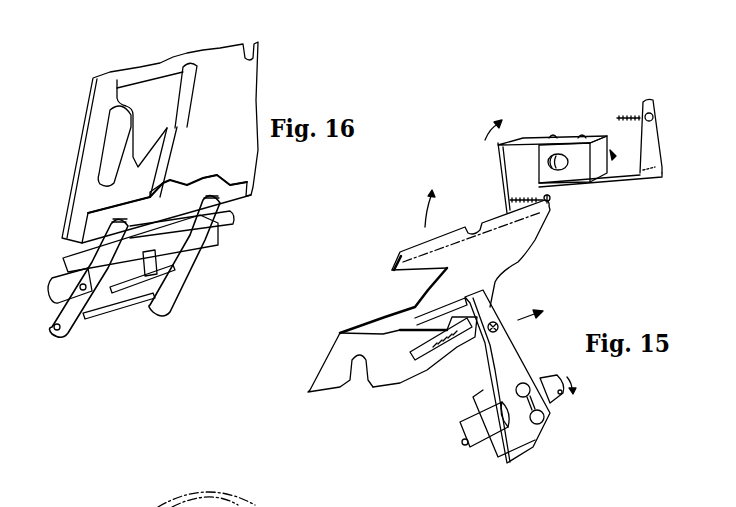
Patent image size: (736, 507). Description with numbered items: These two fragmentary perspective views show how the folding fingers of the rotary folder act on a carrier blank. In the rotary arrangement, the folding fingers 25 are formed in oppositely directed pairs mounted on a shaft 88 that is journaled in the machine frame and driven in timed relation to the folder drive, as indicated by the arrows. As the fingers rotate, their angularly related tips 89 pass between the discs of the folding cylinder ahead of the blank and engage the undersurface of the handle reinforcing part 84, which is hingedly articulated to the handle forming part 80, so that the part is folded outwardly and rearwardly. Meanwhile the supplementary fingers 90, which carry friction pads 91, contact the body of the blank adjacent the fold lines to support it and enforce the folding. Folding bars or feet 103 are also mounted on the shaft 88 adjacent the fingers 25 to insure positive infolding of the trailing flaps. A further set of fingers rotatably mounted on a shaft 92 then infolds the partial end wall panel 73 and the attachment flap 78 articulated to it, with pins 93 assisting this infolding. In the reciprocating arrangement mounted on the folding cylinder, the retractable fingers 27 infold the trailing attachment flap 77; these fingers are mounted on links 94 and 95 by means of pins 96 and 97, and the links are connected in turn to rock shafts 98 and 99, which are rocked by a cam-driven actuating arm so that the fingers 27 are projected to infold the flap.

In FIG. 15, the folding fingers 25 is at (515, 348).
In FIG. 16, the retractable fingers 27 is at (67, 337).
In FIG. 15, the partial end wall panel 73 is at (537, 230).
In FIG. 16, the attachment flap 77 is at (205, 182).
In FIG. 16, the attachment flap 78 is at (220, 55).
In FIG. 15, the attachment flap 78 is at (433, 240).
In FIG. 16, the handle forming part 80 is at (88, 138).
In FIG. 15, the handle forming part 80 is at (327, 387).
In FIG. 16, the handle reinforcing part 84 is at (168, 110).
In FIG. 15, the handle reinforcing part 84 is at (387, 312).
In FIG. 15, the shaft 88 is at (485, 433).
In FIG. 15, the tips 89 is at (447, 297).
In FIG. 15, the supplementary fingers 90 is at (410, 347).
In FIG. 15, the friction pads 91 is at (428, 360).
In FIG. 15, the shaft 92 is at (567, 167).
In FIG. 15, the pins 93 is at (627, 110).
In FIG. 16, the link 94 is at (157, 255).
In FIG. 16, the link 95 is at (123, 310).
In FIG. 16, the pin 96 is at (160, 255).
In FIG. 16, the pin 97 is at (97, 317).
In FIG. 16, the rock shaft 98 is at (230, 220).
In FIG. 16, the rock shaft 99 is at (50, 280).
In FIG. 16, the folding bars or feet 103 is at (167, 157).